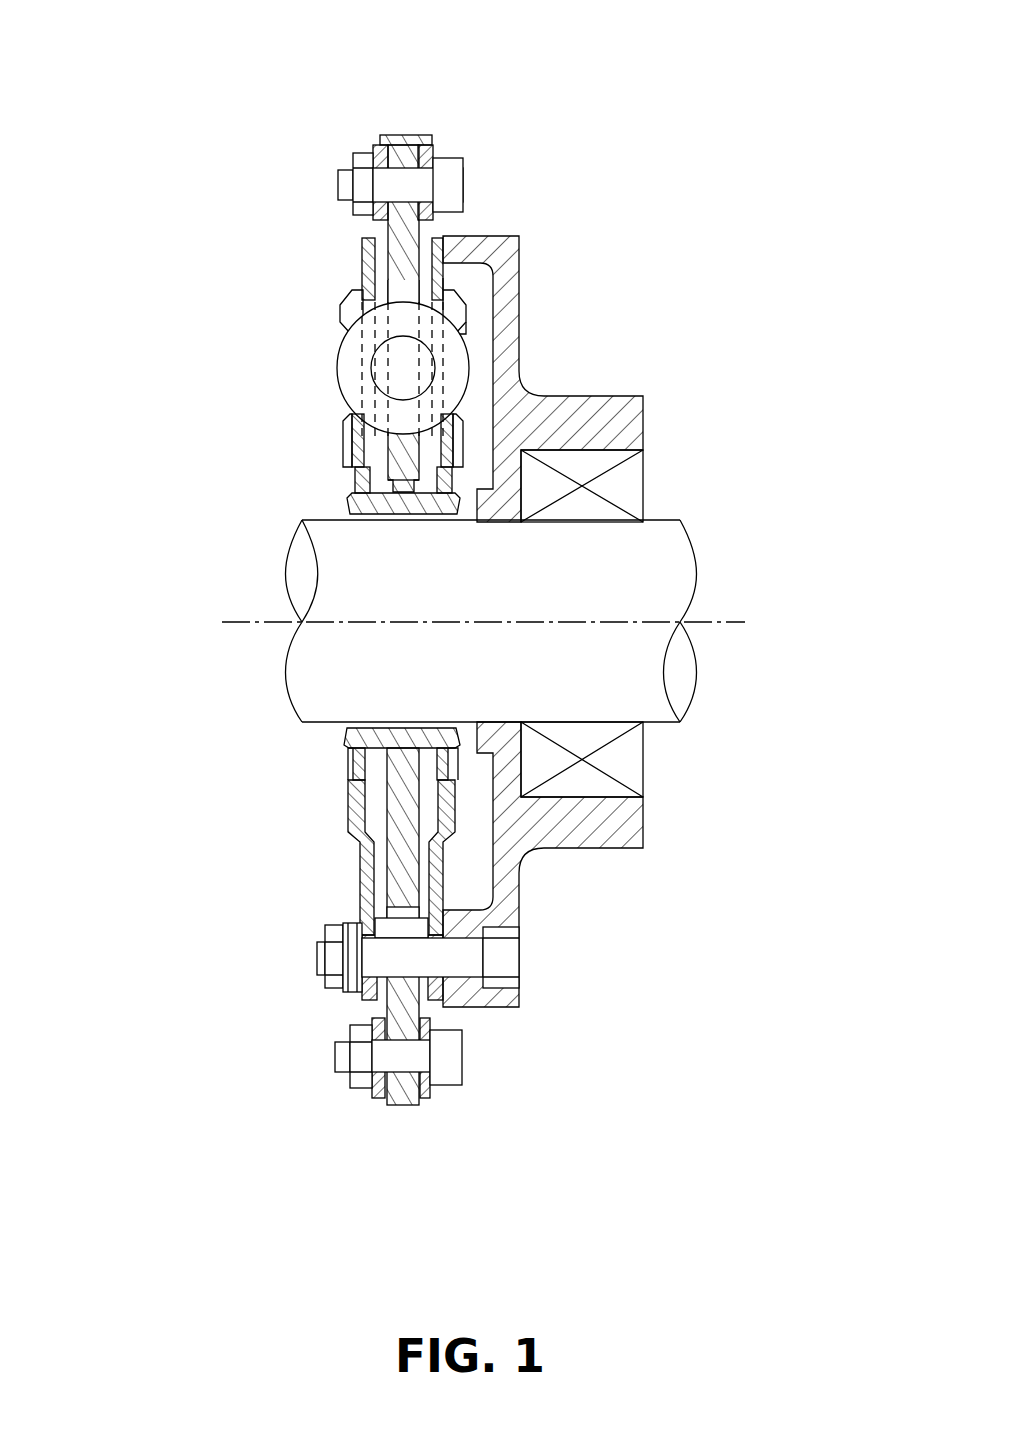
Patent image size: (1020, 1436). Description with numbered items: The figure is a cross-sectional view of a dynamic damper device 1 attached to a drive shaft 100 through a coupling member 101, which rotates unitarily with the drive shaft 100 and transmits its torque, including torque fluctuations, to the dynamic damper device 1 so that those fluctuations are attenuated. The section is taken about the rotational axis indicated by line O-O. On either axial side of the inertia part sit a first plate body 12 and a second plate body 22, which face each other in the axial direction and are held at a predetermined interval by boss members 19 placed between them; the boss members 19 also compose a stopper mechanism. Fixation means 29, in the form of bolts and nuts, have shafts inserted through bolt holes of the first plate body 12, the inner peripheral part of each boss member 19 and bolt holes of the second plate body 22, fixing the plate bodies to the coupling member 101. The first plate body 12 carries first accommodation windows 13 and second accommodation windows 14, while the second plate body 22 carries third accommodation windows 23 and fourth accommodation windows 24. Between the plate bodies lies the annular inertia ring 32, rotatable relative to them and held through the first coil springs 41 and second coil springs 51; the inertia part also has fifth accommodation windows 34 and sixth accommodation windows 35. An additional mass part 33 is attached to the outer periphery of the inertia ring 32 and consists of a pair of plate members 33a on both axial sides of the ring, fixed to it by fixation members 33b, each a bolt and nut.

The dynamic damper device 1 is at (310, 90).
The drive shaft 100 is at (677, 552).
The coupling member 101 is at (625, 411).
The first plate body 12 is at (450, 865).
The first accommodation window 13 is at (598, 276).
The second accommodation window 14 is at (466, 297).
The boss member 19 is at (417, 985).
The second plate body 22 is at (345, 803).
The third accommodation window 23 is at (250, 281).
The fourth accommodation window 24 is at (343, 295).
The fixation means 29 is at (293, 960).
The inertia ring 32 is at (398, 1105).
The additional mass part 33 is at (363, 1107).
The plate member 33a is at (433, 145).
The fixation member 33b is at (475, 167).
The fifth accommodation window 34 is at (270, 239).
The sixth accommodation window 35 is at (383, 290).
The first coil spring 41 is at (310, 408).
The second coil spring 51 is at (330, 375).